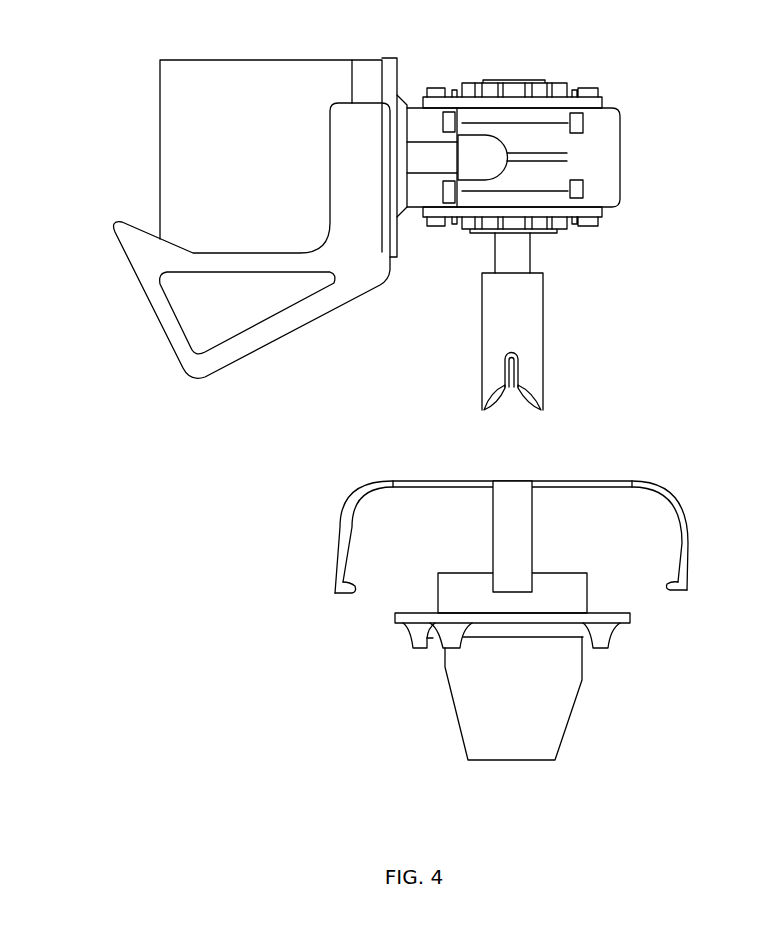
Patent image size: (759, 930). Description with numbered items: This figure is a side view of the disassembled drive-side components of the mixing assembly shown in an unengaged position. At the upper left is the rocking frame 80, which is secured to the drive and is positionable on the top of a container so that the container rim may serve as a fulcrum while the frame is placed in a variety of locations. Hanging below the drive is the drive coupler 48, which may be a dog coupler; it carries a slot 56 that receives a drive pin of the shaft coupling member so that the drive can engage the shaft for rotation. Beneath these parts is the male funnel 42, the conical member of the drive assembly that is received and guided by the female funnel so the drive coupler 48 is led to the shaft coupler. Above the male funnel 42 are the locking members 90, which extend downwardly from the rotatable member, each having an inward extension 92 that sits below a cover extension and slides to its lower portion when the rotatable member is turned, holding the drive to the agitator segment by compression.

The rocking frame 80 is at (170, 333).
The drive coupler 48 is at (522, 308).
The slot 56 is at (512, 389).
The locking members 90 is at (677, 520).
The inward extension 92 is at (357, 580).
The male funnel 42 is at (557, 677).